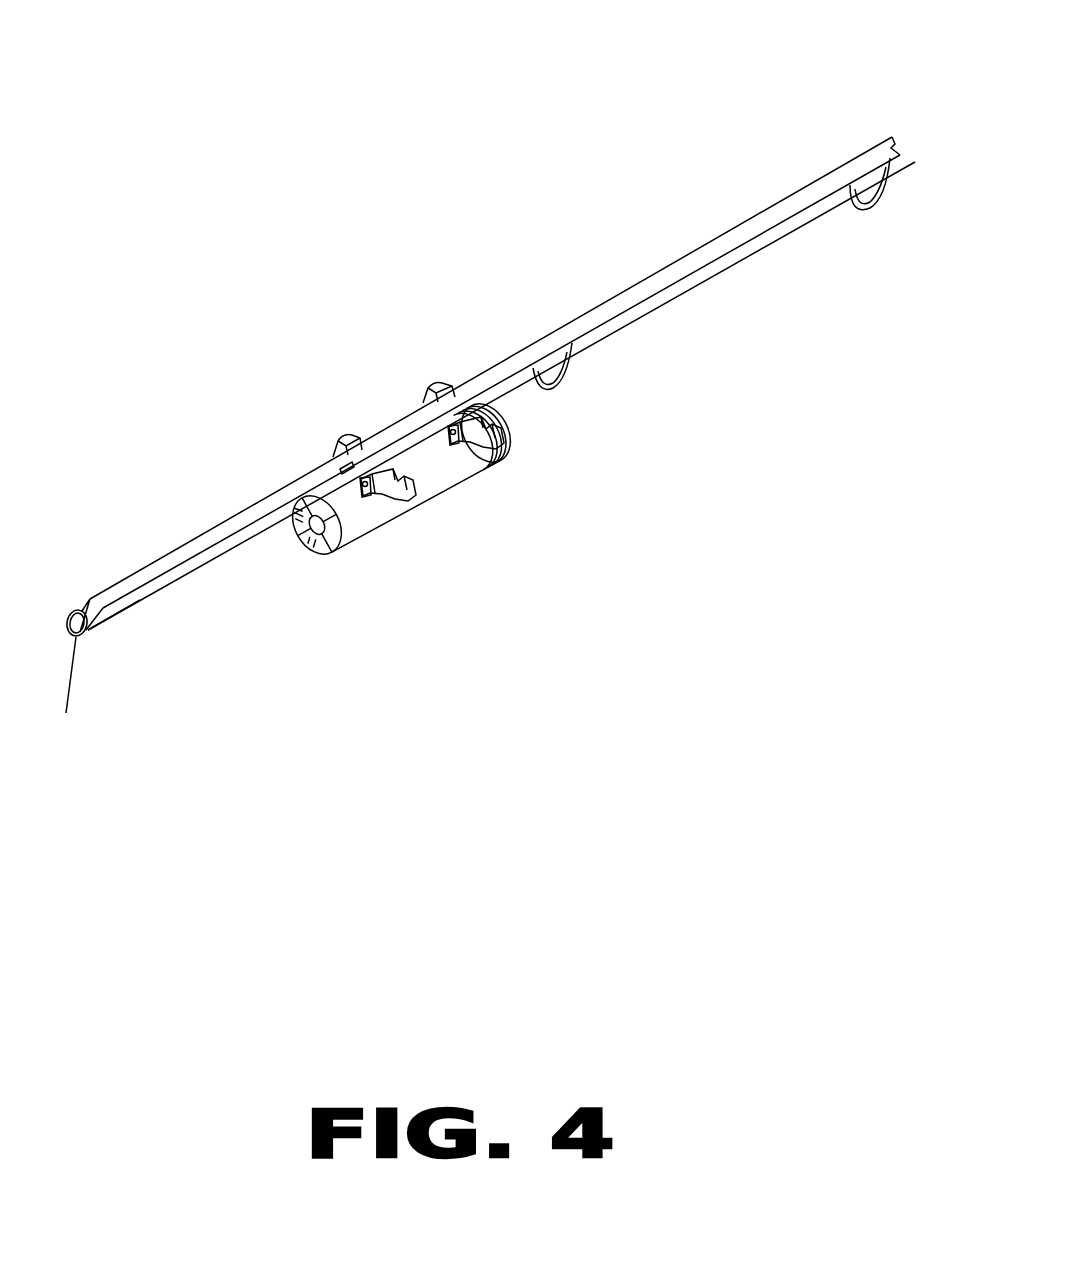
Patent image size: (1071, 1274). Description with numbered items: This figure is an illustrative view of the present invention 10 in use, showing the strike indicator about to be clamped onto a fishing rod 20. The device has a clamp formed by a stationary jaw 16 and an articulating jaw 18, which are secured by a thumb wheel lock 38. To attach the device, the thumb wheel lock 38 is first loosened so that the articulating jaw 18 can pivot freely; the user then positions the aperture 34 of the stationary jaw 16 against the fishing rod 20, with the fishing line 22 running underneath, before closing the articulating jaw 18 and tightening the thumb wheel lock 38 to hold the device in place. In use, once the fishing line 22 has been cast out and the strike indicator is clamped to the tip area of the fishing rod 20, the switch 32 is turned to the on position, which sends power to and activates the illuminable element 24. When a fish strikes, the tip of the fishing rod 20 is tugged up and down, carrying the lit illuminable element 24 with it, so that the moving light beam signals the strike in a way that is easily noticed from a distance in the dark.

The present invention 10 is at (244, 104).
The stationary jaw 16 is at (343, 435).
The articulating jaw 18 is at (407, 498).
The fishing rod 20 is at (138, 600).
The fishing line 22 is at (645, 287).
The illuminable element 24 is at (317, 527).
The switch 32 is at (482, 412).
The aperture 34 is at (333, 443).
The thumb wheel lock 38 is at (368, 486).